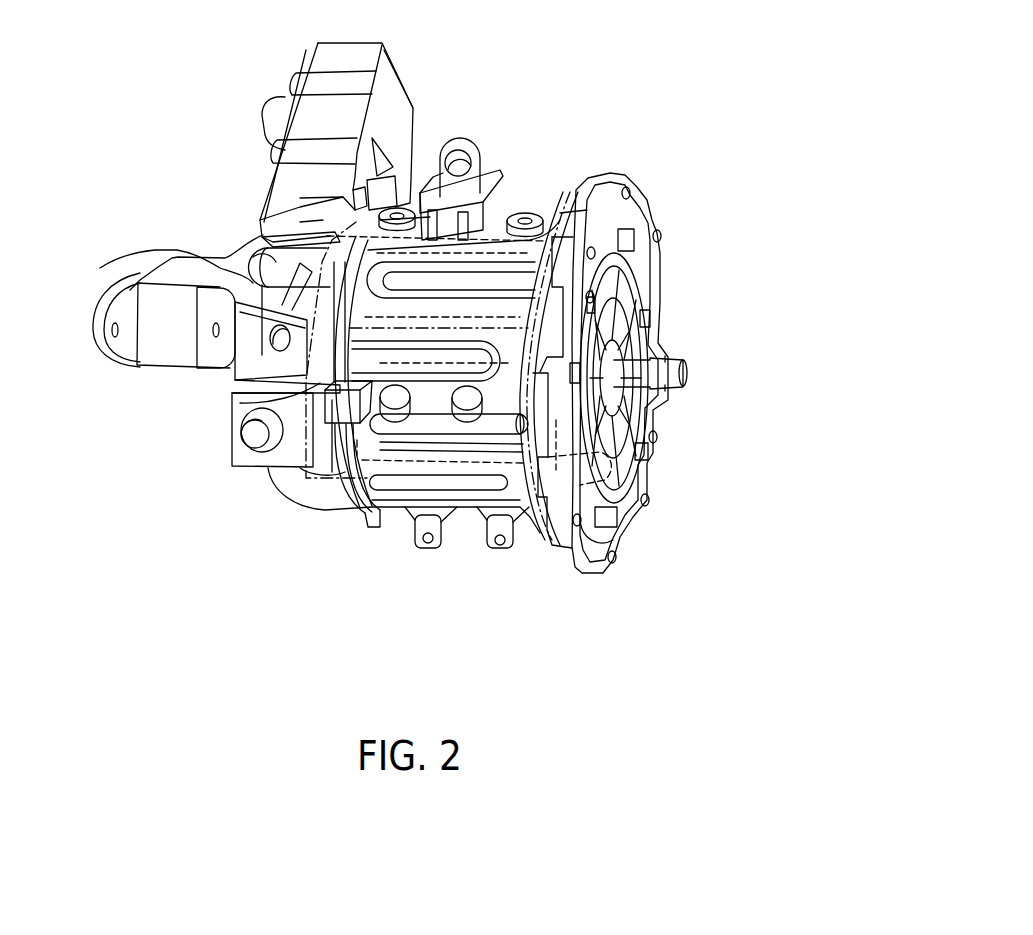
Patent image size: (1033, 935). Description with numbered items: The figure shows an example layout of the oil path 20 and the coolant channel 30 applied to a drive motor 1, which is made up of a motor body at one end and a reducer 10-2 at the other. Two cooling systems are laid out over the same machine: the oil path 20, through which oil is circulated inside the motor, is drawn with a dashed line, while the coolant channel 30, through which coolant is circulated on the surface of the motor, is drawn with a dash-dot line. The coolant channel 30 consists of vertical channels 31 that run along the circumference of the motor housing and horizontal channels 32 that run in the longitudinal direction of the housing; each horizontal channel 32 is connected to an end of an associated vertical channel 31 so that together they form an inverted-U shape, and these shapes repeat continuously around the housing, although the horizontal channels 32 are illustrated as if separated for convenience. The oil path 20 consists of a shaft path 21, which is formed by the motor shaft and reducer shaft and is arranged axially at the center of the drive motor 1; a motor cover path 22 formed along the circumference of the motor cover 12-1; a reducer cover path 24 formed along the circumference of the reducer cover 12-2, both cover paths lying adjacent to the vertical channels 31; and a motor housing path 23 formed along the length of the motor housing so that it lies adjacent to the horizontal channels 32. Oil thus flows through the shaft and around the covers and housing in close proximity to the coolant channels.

The drive motor 1 is at (579, 91).
The reducer 10-2 is at (627, 273).
The motor cover 12-1 is at (268, 241).
The reducer cover 12-2 is at (565, 222).
The oil path 20 is at (310, 665).
The shaft path 21 is at (250, 391).
The motor cover path 22 is at (274, 467).
The motor housing path 23 is at (353, 513).
The reducer cover path 24 is at (537, 465).
The coolant channel 30 is at (310, 625).
The vertical channels 31 is at (100, 269).
The horizontal channels 32 is at (446, 148).